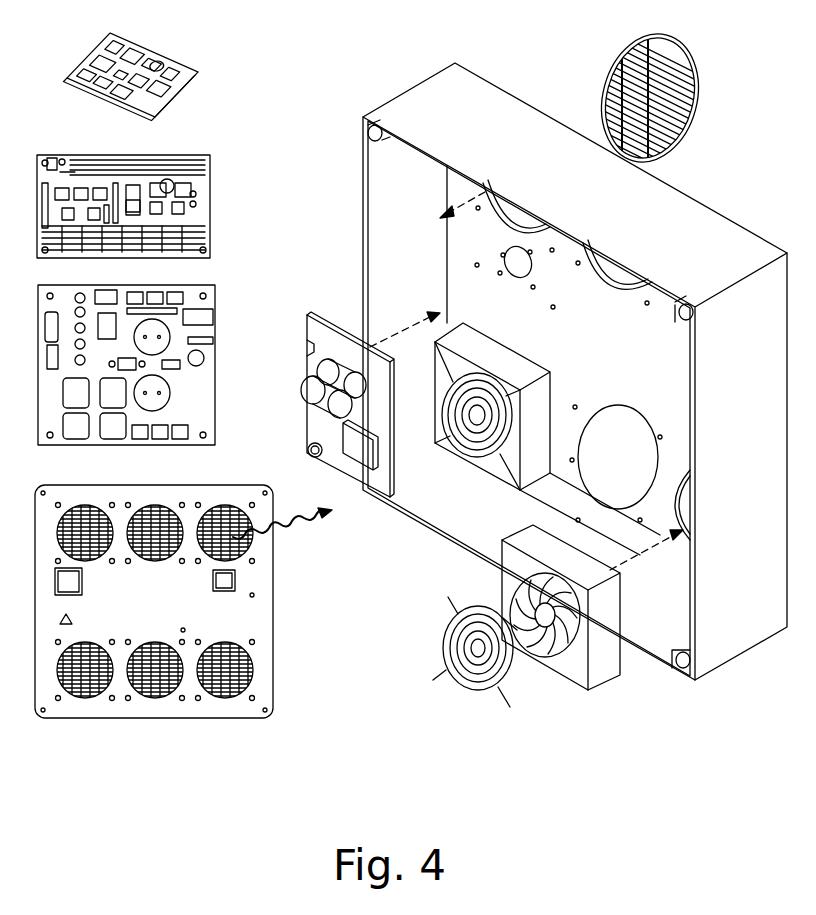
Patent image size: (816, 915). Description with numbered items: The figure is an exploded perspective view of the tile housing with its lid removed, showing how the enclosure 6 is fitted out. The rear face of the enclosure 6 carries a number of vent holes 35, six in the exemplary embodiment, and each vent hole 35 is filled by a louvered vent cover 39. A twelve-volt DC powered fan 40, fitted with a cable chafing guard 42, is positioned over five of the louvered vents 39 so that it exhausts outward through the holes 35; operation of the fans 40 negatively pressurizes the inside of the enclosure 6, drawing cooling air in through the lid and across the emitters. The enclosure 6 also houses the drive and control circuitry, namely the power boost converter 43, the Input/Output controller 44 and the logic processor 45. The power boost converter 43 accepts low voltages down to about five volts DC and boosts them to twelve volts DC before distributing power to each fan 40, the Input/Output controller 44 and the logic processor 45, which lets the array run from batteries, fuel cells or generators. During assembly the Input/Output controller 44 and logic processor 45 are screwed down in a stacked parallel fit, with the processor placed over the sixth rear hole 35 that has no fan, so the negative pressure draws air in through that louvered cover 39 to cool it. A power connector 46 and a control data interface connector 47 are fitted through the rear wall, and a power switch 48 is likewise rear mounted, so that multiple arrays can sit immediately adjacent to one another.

The enclosure 6 is at (428, 88).
The vent hole 35 is at (631, 473).
The louvered vent cover 39 is at (685, 68).
The fan 40 is at (467, 462).
The cable chafing guard 42 is at (443, 632).
The power boost converter 43 is at (218, 332).
The Input/Output (I/O) controller 44 is at (212, 192).
The logic processor 45 is at (195, 78).
The power connector P1 46 is at (56, 578).
The control data interface connector P2 47 is at (237, 582).
The power switch SW1 48 is at (128, 603).